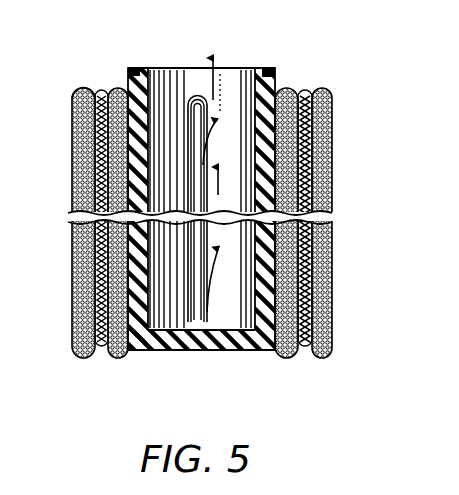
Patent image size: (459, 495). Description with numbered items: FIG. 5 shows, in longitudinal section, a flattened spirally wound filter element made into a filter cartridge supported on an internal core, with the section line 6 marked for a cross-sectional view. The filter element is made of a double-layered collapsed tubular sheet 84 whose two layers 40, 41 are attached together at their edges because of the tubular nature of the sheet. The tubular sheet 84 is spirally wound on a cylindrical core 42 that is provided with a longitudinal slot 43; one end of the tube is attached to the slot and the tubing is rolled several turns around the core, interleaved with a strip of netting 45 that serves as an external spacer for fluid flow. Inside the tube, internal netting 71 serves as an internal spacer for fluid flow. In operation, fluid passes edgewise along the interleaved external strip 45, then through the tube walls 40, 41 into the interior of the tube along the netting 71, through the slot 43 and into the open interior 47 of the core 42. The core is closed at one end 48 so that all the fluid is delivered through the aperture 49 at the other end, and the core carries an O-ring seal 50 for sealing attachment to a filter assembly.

The tube layer 40 is at (73, 137).
The tube layer 41 is at (80, 160).
The cylindrical core 42 is at (266, 70).
The longitudinal slot 43 is at (206, 303).
The strip of netting 45 is at (197, 228).
The open interior 47 is at (229, 110).
The closed end 48 is at (218, 343).
The aperture 49 is at (172, 76).
The O-ring seal 50 is at (272, 82).
The internal netting 71 is at (110, 107).
The double-layered tubular sheet 84 is at (78, 82).
The section line 6- 6 is at (65, 245).